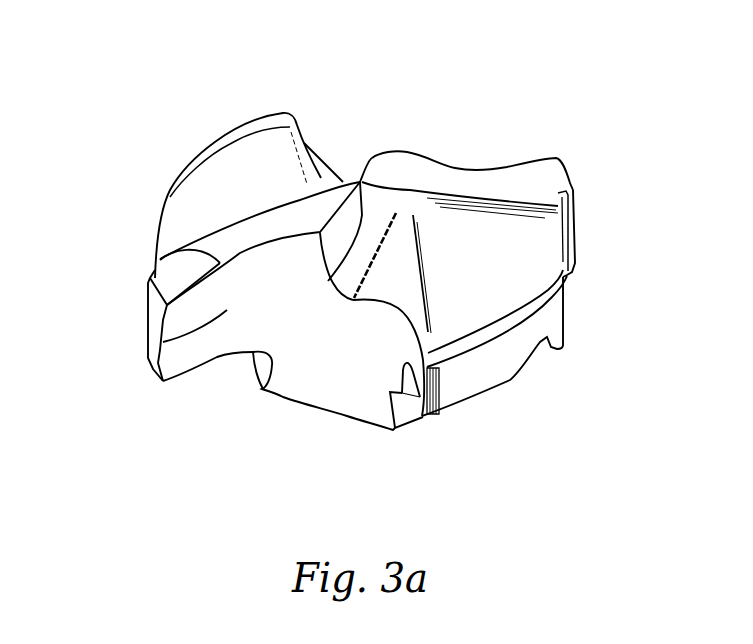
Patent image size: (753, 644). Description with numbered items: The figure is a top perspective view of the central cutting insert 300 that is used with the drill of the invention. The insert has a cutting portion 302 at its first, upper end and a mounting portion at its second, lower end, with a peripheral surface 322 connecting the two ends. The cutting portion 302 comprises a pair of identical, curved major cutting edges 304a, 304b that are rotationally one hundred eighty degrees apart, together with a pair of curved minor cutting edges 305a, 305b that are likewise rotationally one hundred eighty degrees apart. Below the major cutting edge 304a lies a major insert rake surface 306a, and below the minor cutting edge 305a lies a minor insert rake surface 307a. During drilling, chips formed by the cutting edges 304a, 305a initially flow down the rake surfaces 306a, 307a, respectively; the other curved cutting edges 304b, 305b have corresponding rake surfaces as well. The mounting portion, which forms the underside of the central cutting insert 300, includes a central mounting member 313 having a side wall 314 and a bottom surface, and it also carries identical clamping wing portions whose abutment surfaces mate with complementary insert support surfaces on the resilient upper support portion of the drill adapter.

The central cutting insert 300 is at (706, 105).
The cutting portion 302 is at (387, 203).
The major cutting edge 304a is at (160, 259).
The major cutting edge 304b is at (490, 170).
The minor cutting edge 305a is at (397, 309).
The minor cutting edge 305b is at (318, 160).
The major insert rake surface 306a is at (163, 342).
The minor insert rake surface 307a is at (350, 343).
The central mounting member 313 is at (238, 372).
The side wall 314 is at (410, 413).
The peripheral surface 322 is at (553, 320).